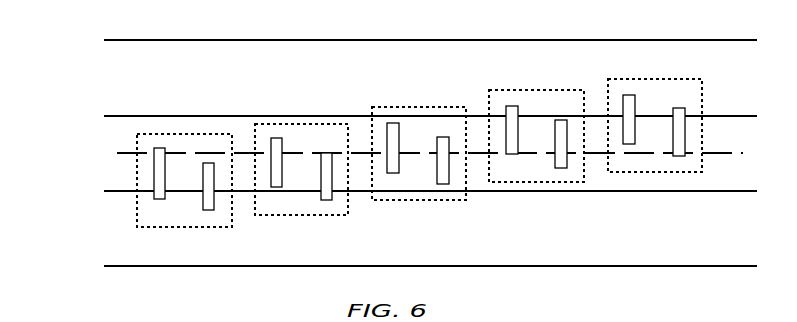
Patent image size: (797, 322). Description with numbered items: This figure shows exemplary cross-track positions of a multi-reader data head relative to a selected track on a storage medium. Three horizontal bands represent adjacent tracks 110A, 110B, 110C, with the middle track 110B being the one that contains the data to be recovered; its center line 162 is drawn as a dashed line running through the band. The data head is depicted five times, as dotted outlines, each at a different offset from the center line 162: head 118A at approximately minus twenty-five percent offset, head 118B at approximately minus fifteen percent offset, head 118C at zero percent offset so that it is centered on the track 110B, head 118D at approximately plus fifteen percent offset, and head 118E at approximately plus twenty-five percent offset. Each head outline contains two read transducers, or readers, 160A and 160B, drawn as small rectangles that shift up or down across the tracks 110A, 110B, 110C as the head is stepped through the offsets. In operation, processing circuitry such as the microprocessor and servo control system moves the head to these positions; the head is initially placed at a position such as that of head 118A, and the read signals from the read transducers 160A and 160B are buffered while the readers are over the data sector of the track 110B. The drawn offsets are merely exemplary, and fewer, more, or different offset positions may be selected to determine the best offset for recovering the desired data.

The track 110A is at (93, 43).
The track 110B is at (391, 135).
The track 110C is at (93, 193).
The head 118A is at (185, 134).
The head 118B is at (290, 124).
The head 118C is at (428, 200).
The head 118D is at (537, 182).
The head 118E is at (655, 172).
The read transducer 160A is at (160, 191).
The read transducer 160B is at (209, 205).
The center line 162 is at (718, 153).